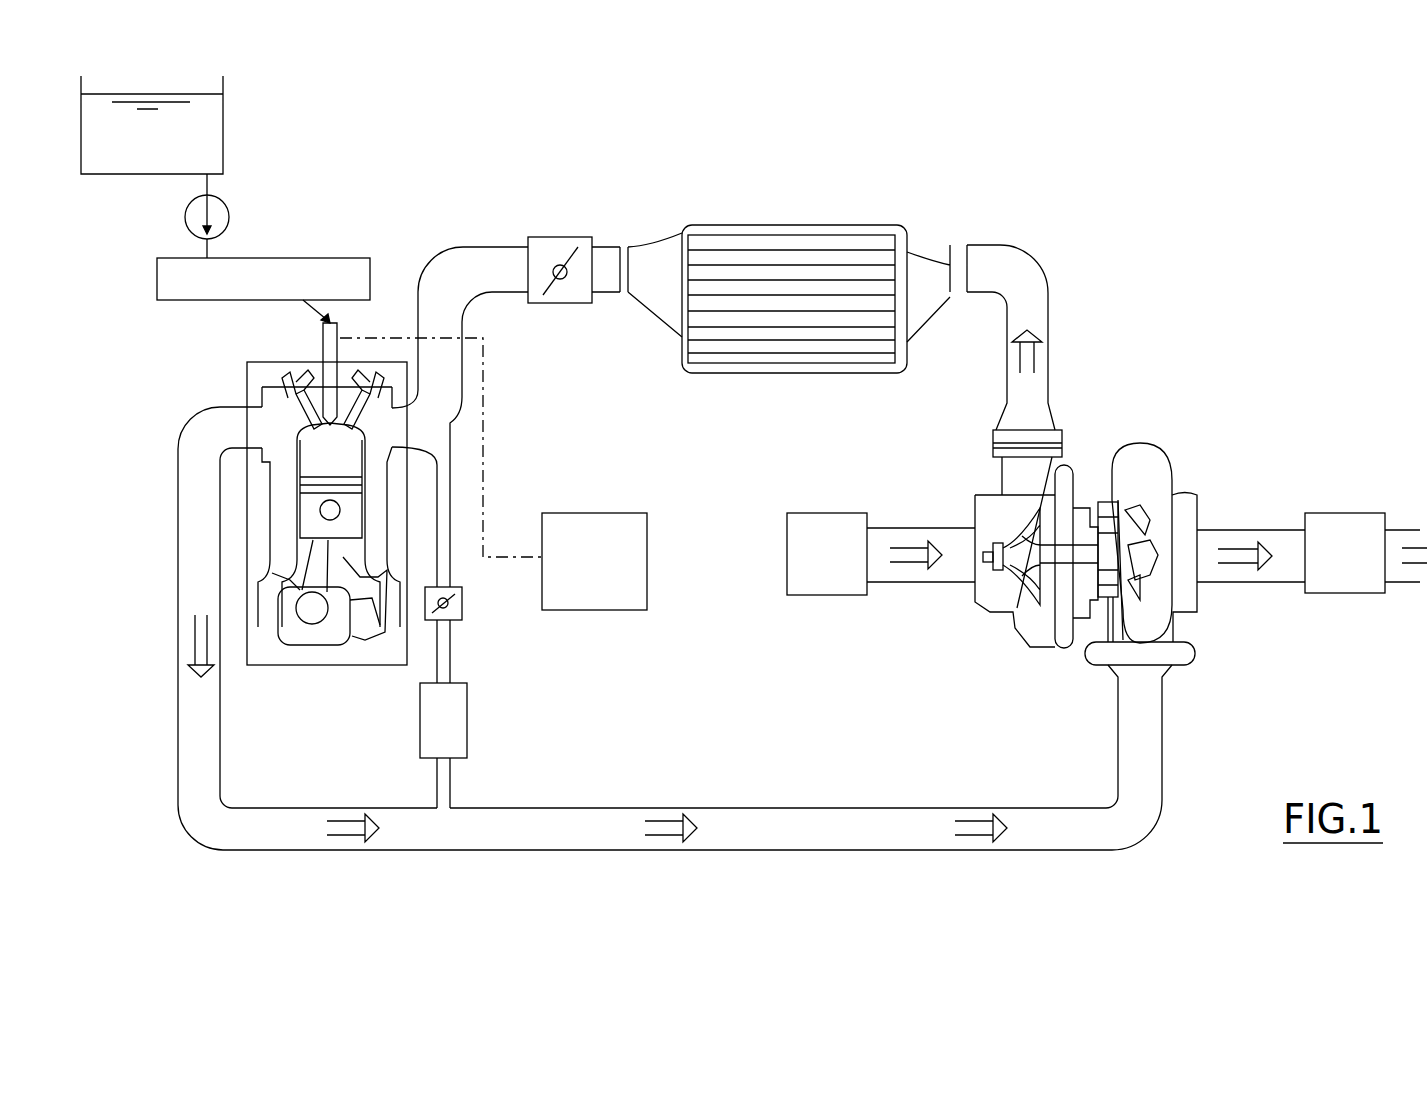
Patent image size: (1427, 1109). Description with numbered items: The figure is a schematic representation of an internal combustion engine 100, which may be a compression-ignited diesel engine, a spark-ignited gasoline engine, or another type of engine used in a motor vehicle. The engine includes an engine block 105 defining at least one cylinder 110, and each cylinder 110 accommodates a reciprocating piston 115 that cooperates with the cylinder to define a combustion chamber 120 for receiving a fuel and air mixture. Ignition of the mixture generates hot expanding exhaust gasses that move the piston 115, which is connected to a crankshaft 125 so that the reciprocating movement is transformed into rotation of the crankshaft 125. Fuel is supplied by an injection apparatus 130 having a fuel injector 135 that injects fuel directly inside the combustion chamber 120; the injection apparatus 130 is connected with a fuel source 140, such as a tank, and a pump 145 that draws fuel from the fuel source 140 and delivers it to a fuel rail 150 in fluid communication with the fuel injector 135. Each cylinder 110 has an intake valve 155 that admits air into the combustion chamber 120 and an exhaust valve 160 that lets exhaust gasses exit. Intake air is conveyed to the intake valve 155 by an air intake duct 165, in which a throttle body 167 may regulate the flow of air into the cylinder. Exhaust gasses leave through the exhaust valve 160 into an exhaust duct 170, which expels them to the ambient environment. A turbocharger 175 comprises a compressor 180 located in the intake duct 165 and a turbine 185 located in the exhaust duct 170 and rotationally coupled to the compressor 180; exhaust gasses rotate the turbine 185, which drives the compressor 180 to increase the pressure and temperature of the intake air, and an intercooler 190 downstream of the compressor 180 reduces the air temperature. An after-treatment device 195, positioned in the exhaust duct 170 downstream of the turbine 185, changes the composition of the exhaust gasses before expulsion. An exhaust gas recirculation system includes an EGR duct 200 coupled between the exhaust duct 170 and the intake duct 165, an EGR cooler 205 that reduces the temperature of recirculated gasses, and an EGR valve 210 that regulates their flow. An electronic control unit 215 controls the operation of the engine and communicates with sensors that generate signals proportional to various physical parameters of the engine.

The internal combustion engine 100 is at (240, 684).
The engine block 105 is at (278, 500).
The cylinder 110 is at (290, 453).
The piston 115 is at (318, 522).
The combustion chamber 120 is at (330, 468).
The crankshaft 125 is at (312, 612).
The injection apparatus 130 is at (326, 182).
The fuel injector 135 is at (328, 345).
The fuel source 140 is at (144, 155).
The pump 145 is at (215, 213).
The fuel rail 150 is at (318, 270).
The intake valve 155 is at (398, 393).
The exhaust valve 160 is at (290, 402).
The air intake duct 165 is at (1022, 267).
The throttle body 167 is at (548, 250).
The exhaust duct 170 is at (558, 835).
The turbocharger 175 is at (1099, 430).
The compressor 180 is at (1028, 617).
The turbine 185 is at (1155, 477).
The intercooler 190 is at (778, 250).
The after-treatment device 195 is at (1338, 530).
The EGR duct 200 is at (445, 477).
The EGR cooler 205 is at (458, 725).
The EGR valve 210 is at (465, 612).
The electronic control unit 215 is at (590, 553).